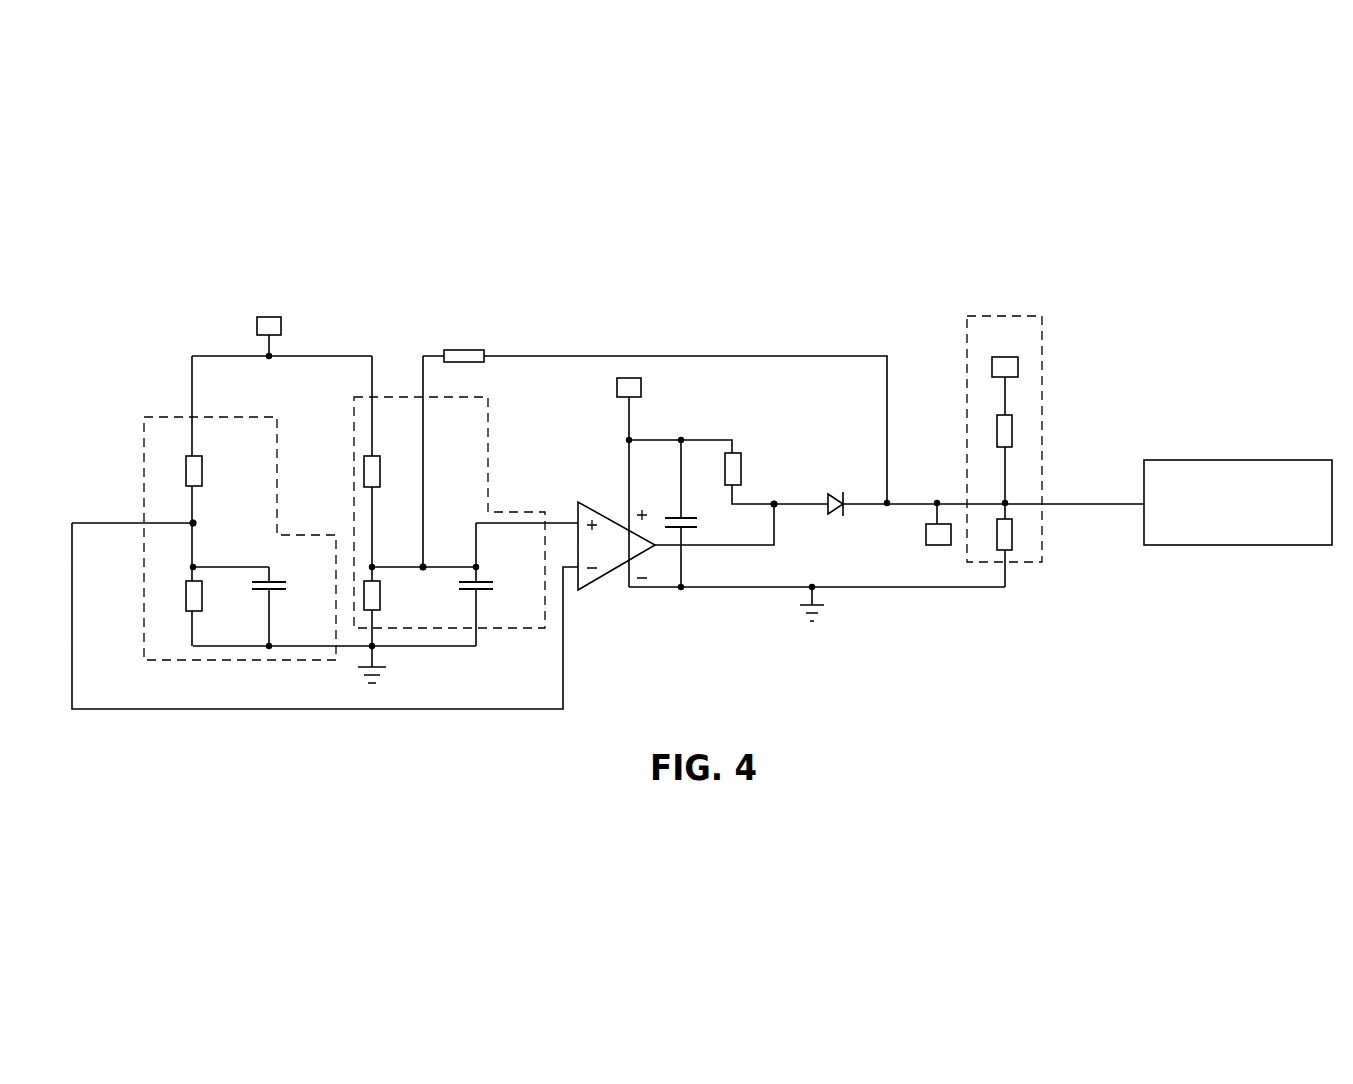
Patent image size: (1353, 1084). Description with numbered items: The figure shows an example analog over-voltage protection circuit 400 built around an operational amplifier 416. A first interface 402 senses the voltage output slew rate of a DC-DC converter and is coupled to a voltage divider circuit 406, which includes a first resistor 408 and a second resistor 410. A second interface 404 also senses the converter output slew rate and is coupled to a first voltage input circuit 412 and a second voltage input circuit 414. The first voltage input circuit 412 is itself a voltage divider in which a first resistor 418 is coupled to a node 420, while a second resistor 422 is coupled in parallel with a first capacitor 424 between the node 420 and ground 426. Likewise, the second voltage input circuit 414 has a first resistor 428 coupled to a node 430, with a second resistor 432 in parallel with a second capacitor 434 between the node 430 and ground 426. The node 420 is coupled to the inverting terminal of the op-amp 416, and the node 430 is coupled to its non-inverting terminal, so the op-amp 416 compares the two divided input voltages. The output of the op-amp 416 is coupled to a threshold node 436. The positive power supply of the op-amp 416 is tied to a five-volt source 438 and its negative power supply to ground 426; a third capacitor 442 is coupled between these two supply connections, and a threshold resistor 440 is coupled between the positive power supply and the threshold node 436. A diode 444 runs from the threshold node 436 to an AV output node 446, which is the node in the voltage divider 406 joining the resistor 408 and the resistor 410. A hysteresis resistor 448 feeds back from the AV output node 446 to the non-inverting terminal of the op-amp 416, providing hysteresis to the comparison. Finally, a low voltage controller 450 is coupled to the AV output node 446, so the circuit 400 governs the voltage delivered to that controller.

The analog over-voltage protection circuit 400 is at (1230, 284).
The first interface 402 is at (992, 366).
The second interface 404 is at (257, 326).
The voltage divider circuit 406 is at (1042, 337).
The first resistor 408 is at (1012, 428).
The second resistor 410 is at (1012, 538).
The first voltage input circuit 412 is at (150, 417).
The second voltage input circuit 414 is at (413, 396).
The operational amplifier 416 is at (588, 502).
The first resistor 418 is at (186, 470).
The node 420 is at (200, 523).
The second resistor 422 is at (186, 583).
The first capacitor 424 is at (264, 596).
The ground 426 is at (380, 665).
The first resistor 428 is at (364, 470).
The node 430 is at (425, 565).
The second resistor 432 is at (380, 595).
The second capacitor 434 is at (484, 593).
The threshold node 436 is at (775, 502).
The five-volt source 438 is at (631, 378).
The threshold resistor 440 is at (742, 453).
The third capacitor 442 is at (690, 530).
The diode 444 is at (834, 494).
The AV output node 446 is at (937, 500).
The hysteresis resistor 448 is at (469, 350).
The low voltage controller 450 is at (1144, 528).